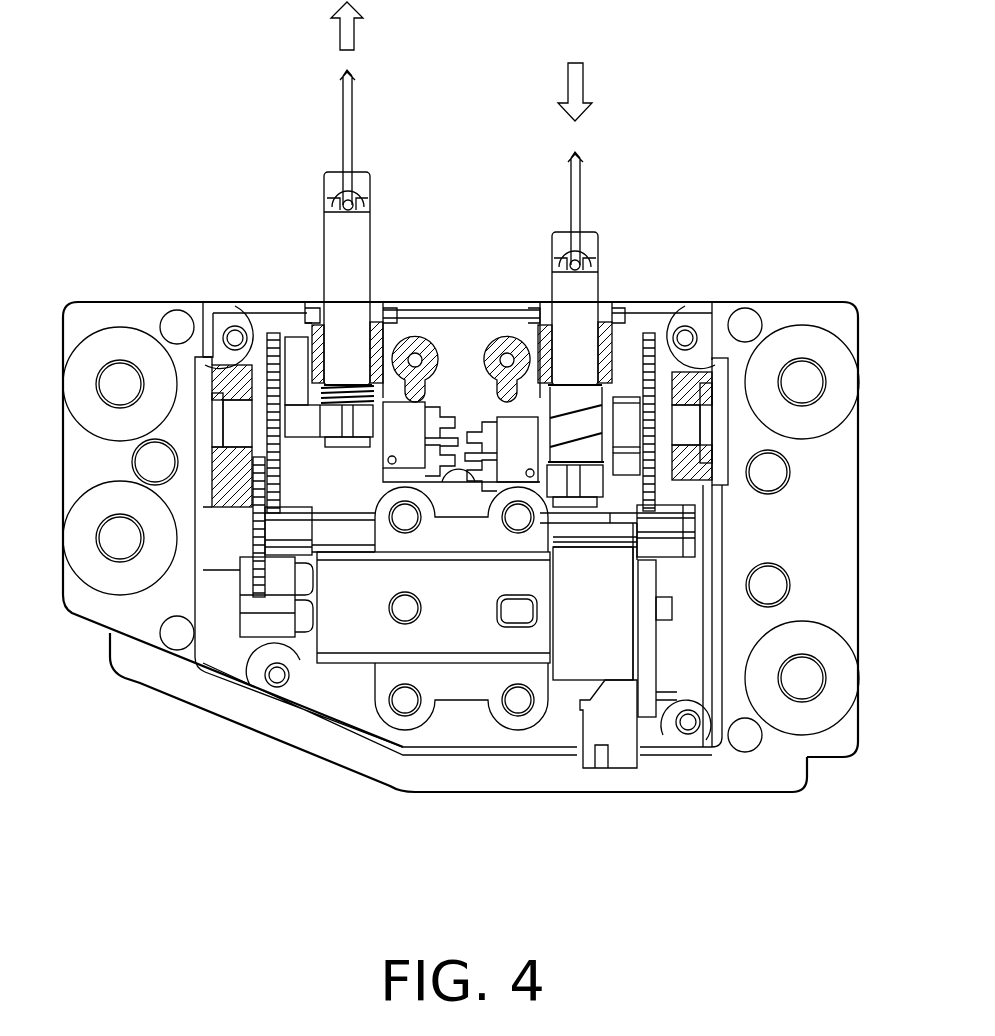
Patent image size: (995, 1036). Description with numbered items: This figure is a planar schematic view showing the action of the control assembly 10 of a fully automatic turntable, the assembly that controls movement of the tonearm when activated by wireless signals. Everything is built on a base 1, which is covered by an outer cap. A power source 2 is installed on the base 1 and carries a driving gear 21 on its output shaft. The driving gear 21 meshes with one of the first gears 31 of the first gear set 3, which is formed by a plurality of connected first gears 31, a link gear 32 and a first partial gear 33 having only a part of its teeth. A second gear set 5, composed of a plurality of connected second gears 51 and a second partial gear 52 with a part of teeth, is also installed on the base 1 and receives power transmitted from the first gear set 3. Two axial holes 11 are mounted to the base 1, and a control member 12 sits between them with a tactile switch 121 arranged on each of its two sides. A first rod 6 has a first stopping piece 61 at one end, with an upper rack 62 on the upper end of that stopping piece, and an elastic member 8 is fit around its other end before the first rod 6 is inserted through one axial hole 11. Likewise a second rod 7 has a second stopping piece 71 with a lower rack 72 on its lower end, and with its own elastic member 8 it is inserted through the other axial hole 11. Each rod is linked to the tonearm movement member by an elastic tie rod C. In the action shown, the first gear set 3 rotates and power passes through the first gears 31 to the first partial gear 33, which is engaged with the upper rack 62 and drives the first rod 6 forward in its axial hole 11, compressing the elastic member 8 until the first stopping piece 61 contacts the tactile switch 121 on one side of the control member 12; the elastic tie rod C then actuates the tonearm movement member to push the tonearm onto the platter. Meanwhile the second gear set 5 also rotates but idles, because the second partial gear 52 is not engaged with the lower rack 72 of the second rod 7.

The base 1 is at (807, 760).
The power source 2 is at (460, 660).
The first gear set 3 is at (235, 472).
The second gear set 5 is at (663, 491).
The first rod 6 is at (333, 236).
The second rod 7 is at (580, 286).
The elastic member 8 is at (342, 380).
The control assembly 10 is at (778, 233).
The axial hole 11 is at (552, 300).
The control member 12 is at (432, 468).
The tactile switch 121 is at (555, 432).
The driving gear 21 is at (272, 618).
The first gear 31 is at (270, 352).
The link gear 32 is at (260, 562).
The first partial gear 33 is at (297, 443).
The second gear 51 is at (625, 420).
The second partial gear 52 is at (647, 420).
The first stopping piece 61 is at (333, 432).
The upper rack 62 is at (296, 343).
The second stopping piece 71 is at (592, 490).
The lower rack 72 is at (625, 470).
The elastic tie rod C is at (350, 110).